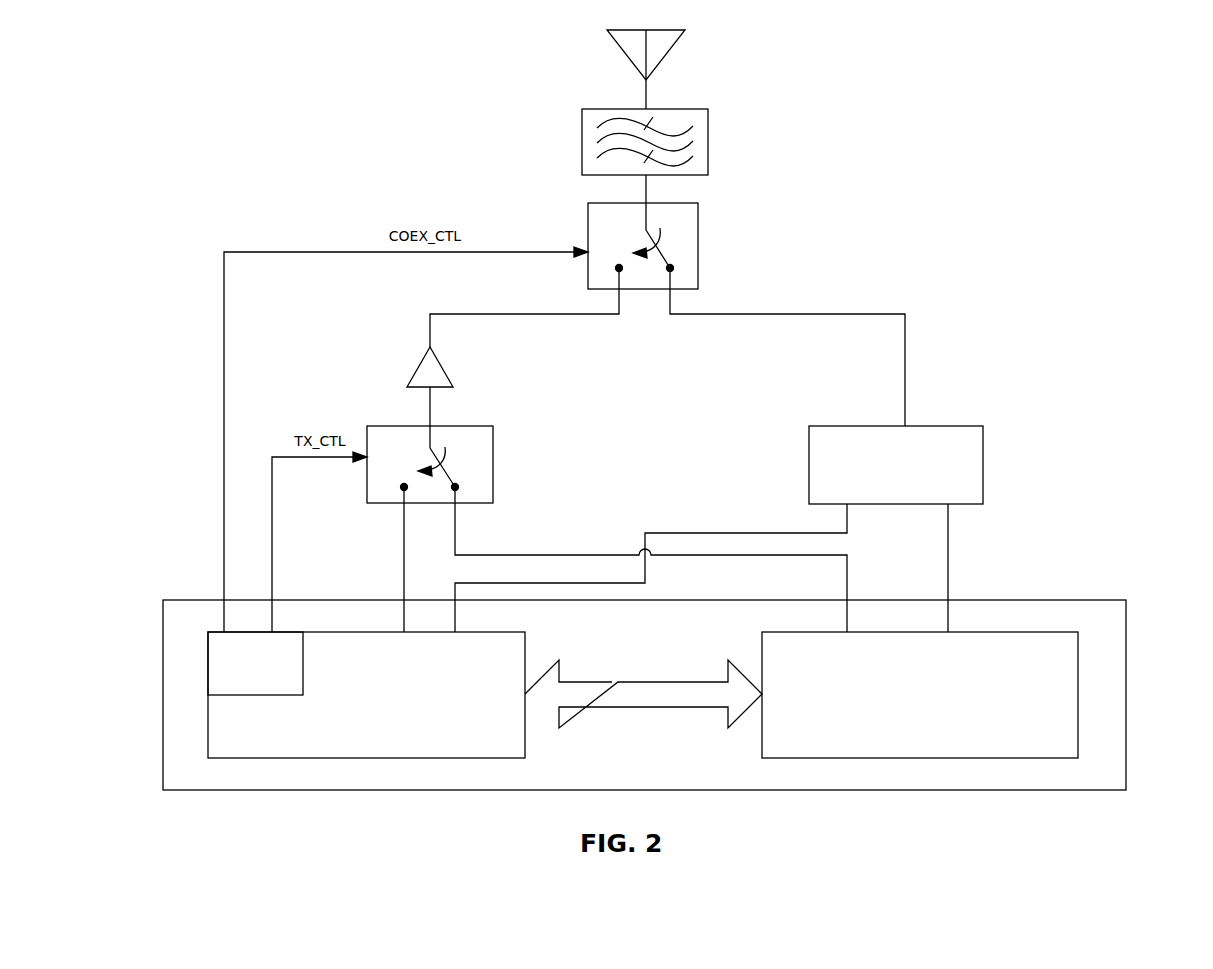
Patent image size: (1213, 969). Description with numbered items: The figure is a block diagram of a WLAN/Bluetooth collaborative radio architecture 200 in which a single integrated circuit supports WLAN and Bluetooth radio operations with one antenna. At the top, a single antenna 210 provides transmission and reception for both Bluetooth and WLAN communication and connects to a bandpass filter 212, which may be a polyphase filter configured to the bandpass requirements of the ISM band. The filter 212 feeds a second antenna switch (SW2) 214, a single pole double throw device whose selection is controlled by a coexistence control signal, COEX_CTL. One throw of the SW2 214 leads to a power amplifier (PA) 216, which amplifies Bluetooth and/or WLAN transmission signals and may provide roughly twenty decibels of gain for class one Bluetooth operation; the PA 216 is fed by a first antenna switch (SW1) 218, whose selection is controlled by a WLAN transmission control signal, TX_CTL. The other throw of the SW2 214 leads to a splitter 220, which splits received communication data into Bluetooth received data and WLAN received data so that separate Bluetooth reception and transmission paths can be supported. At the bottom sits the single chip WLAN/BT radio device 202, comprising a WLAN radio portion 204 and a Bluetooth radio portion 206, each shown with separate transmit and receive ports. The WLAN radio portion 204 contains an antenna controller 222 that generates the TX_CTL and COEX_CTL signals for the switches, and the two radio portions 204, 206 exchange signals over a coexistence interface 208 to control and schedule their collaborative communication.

The WLAN/Bluetooth collaborative radio architecture 200 is at (255, 167).
The single chip WLAN/BT radio device 202 is at (1126, 662).
The WLAN radio portion 204 is at (525, 653).
The Bluetooth radio portion 206 is at (762, 656).
The coexistence interface 208 is at (612, 682).
The single antenna 210 is at (677, 45).
The bandpass filter 212 is at (708, 150).
The second antenna switch (SW2) 214 is at (698, 242).
The power amplifier (PA) 216 is at (450, 383).
The first antenna switch (SW1) 218 is at (493, 467).
The splitter 220 is at (983, 460).
The antenna controller 222 is at (303, 665).